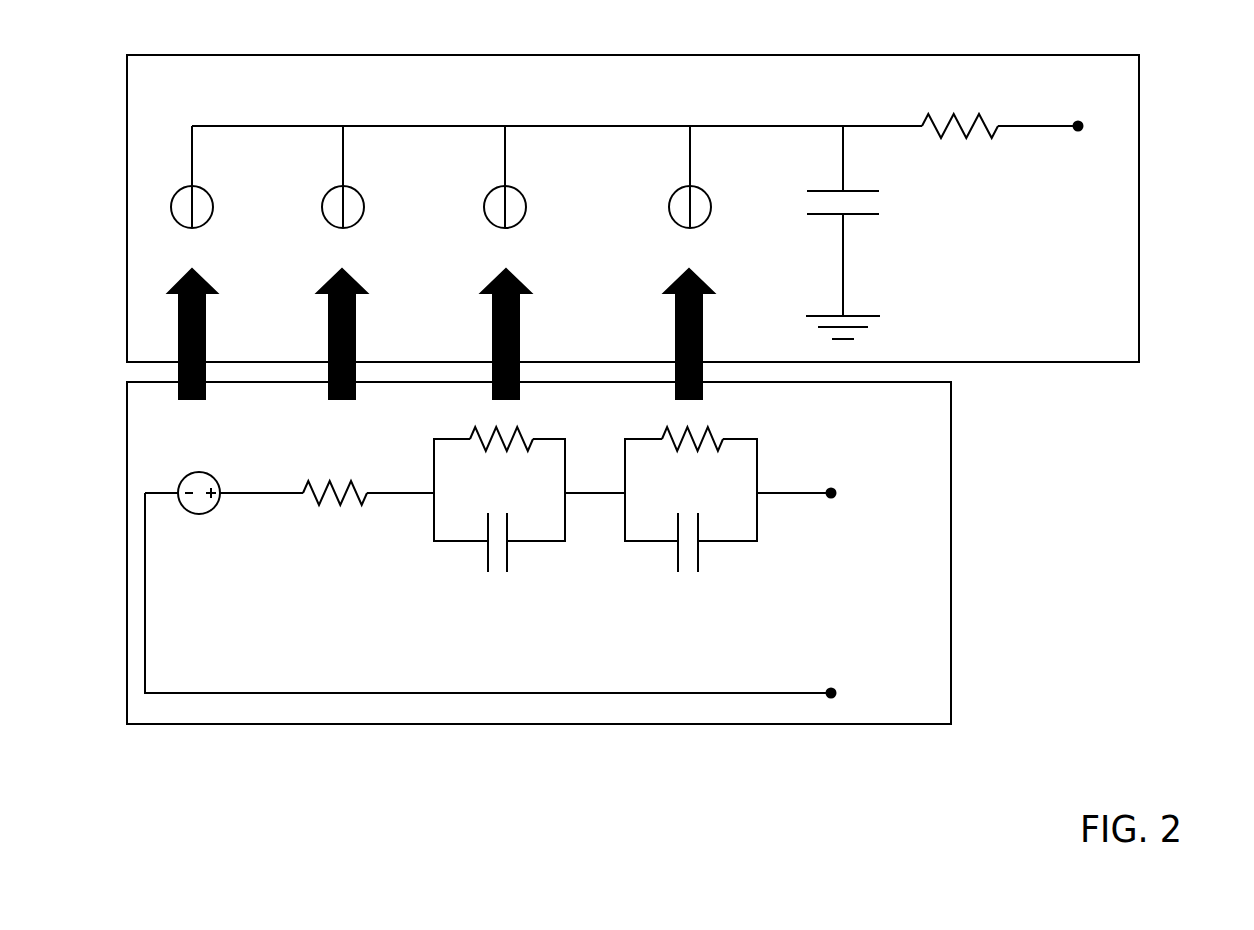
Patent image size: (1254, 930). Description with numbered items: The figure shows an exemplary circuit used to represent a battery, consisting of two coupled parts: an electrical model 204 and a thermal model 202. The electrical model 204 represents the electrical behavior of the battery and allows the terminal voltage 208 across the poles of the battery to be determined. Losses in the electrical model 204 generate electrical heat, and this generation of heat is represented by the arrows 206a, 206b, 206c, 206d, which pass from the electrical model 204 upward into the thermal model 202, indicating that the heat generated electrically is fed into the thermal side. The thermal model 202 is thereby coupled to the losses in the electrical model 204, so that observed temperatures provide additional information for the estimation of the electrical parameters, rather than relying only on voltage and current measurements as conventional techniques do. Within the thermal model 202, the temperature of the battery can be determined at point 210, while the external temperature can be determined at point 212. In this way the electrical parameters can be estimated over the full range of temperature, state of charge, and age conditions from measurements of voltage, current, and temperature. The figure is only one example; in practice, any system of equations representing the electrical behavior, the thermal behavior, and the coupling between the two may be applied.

The thermal model 202 is at (1139, 207).
The electrical model 204 is at (951, 553).
The arrow 206a is at (205, 330).
The arrow 206b is at (355, 330).
The arrow 206c is at (519, 330).
The arrow 206d is at (702, 318).
The terminal voltage 208 is at (866, 576).
The point 210 is at (846, 118).
The point 212 is at (1094, 122).